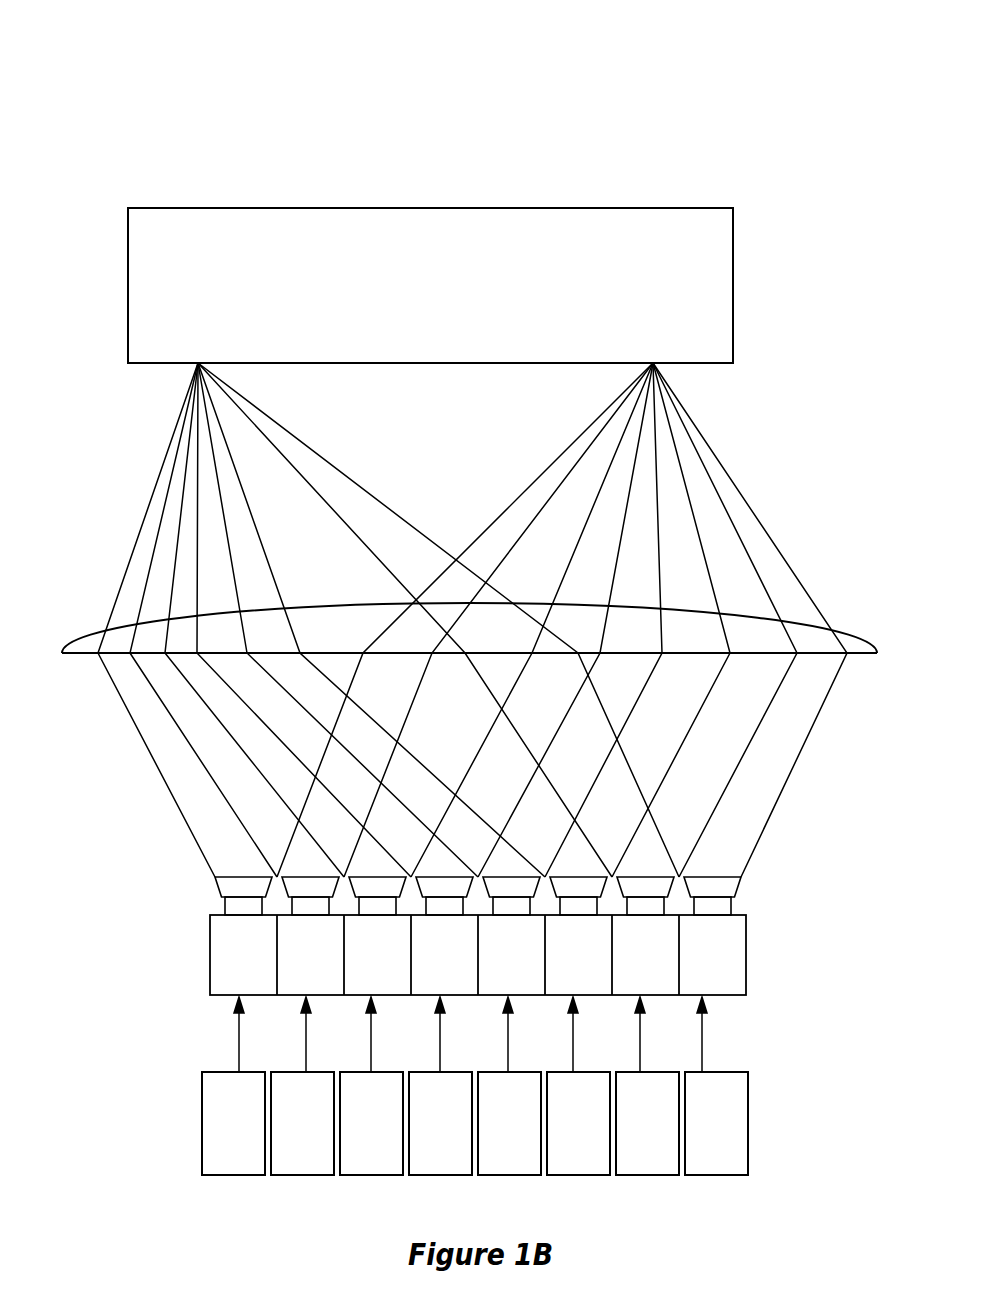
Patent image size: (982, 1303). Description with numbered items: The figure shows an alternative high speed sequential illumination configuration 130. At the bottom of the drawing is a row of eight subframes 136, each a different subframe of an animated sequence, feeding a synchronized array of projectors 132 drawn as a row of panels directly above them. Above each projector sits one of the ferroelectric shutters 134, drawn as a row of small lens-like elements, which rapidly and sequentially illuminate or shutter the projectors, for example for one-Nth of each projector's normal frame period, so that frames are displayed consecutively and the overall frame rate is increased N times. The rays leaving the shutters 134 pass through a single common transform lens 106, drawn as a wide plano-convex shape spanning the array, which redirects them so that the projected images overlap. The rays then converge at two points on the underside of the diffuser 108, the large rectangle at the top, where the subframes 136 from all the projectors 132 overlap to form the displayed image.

The high speed sequential illumination configuration 130 is at (490, 48).
The diffuser 108 is at (233, 208).
The common transform lens 106 is at (102, 632).
The ferroelectric shutters 134 is at (188, 847).
The projectors 132 is at (190, 910).
The subframe 136 is at (187, 1072).